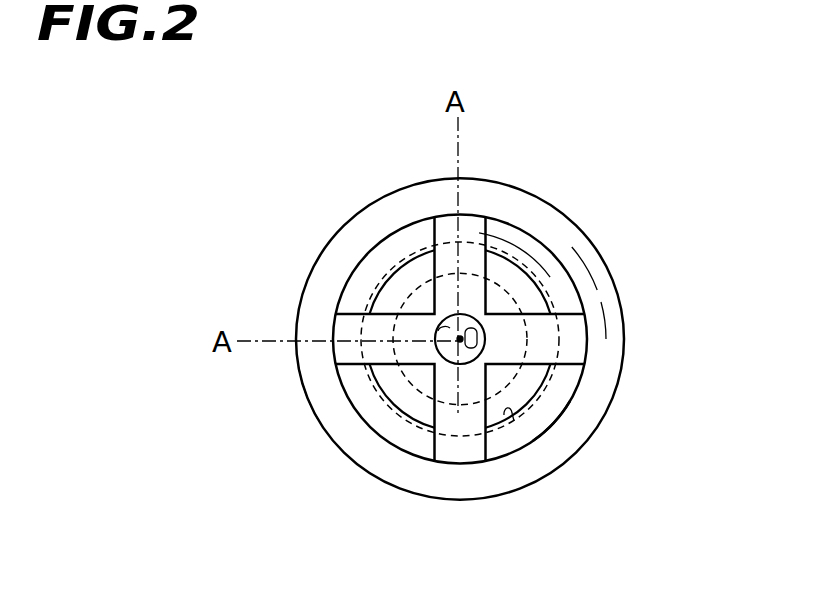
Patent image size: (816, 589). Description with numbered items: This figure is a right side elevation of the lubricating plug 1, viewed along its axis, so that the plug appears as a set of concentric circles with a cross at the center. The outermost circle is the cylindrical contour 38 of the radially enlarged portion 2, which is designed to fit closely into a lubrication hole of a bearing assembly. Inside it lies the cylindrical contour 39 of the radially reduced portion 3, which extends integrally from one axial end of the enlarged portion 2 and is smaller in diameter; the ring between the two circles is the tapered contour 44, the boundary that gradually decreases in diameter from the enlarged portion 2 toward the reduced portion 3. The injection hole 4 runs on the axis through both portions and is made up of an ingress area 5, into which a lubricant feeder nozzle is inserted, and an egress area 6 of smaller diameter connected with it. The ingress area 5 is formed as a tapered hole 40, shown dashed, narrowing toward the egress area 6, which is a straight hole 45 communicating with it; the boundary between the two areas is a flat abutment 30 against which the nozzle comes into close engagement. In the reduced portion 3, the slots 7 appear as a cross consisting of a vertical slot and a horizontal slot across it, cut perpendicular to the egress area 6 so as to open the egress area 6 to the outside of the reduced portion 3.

The lubricating plug 1 is at (350, 204).
The radially enlarged portion 2 is at (592, 277).
The radially reduced portion 3 is at (524, 252).
The injection hole 4 is at (497, 372).
The ingress area 5 is at (507, 412).
The egress area 6 is at (460, 366).
The slot 7 is at (468, 230).
The flat abutment 30 is at (593, 428).
The cylindrical contour 38 is at (305, 405).
The cylindrical contour 39 is at (560, 263).
The tapered hole 40 is at (408, 268).
The tapered contour 44 is at (608, 317).
The straight hole 45 is at (458, 338).